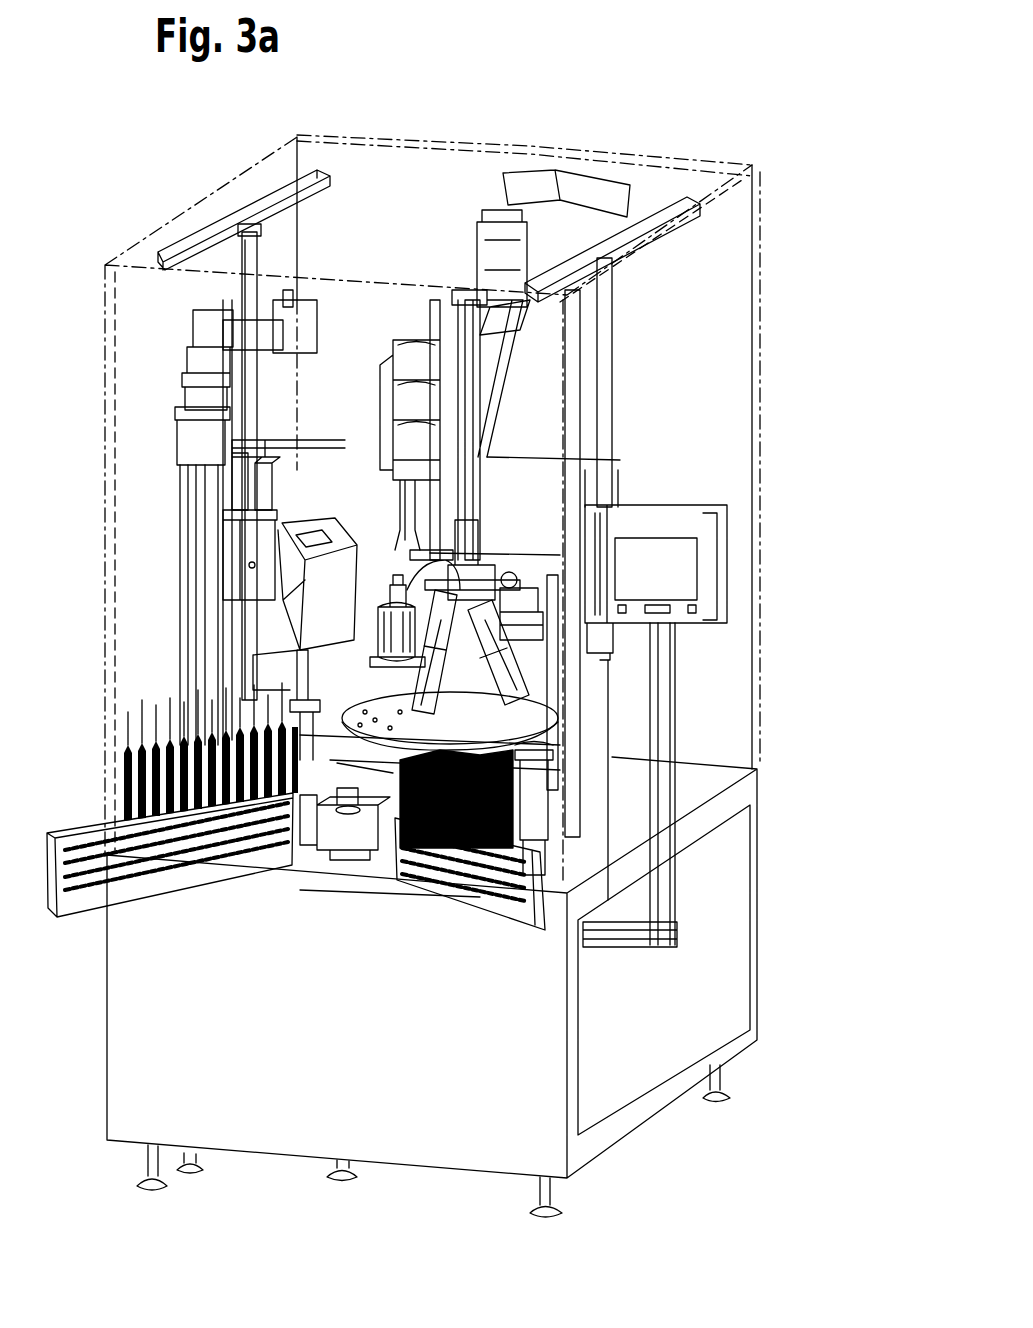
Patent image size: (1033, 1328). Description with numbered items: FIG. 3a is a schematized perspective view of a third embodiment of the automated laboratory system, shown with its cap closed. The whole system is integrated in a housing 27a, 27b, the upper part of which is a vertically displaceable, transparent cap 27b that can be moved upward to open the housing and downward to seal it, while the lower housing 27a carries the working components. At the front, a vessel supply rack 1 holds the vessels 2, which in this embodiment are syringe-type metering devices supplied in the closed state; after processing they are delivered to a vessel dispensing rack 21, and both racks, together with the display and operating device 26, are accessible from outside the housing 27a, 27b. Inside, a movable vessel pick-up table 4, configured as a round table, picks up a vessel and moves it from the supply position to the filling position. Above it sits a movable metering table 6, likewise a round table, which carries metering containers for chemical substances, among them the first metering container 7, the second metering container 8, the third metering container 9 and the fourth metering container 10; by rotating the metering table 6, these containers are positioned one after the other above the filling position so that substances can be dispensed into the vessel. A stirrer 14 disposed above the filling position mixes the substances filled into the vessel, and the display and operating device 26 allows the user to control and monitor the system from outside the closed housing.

The vessel supply rack 1 is at (88, 825).
The vessels 2 is at (142, 750).
The vessel pick-up table 4 is at (353, 858).
The metering table 6 is at (370, 708).
The first metering container 7 is at (447, 655).
The second metering container 8 is at (472, 665).
The third metering container 9 is at (510, 572).
The fourth metering container 10 is at (392, 598).
The stirrer 14 is at (388, 530).
The vessel dispensing rack 21 is at (482, 890).
The display and operating device 26 is at (667, 563).
The housing 27a is at (623, 1055).
The transparent cap 27b is at (742, 330).